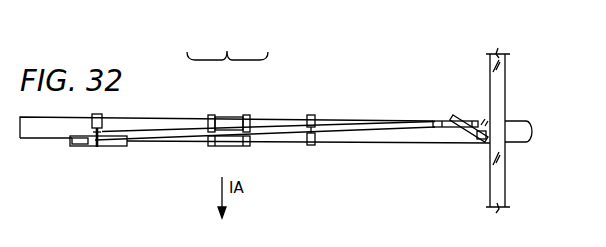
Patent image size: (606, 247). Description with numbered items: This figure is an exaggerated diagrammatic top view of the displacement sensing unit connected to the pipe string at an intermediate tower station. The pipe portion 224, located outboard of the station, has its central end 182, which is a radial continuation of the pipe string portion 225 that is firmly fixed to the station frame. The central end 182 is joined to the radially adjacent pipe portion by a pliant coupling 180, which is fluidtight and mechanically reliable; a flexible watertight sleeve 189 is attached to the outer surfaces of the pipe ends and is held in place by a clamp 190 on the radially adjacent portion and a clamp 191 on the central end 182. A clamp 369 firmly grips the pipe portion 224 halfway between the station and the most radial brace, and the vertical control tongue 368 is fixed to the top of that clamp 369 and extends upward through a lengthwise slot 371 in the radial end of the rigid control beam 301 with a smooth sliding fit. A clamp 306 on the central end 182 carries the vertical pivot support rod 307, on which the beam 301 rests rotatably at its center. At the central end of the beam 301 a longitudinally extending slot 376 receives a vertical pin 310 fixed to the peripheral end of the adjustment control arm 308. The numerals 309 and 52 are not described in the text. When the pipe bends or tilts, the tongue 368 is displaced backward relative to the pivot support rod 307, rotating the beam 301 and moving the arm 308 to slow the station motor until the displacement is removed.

The pipe portion 224 is at (58, 132).
The central end of pipe portion 182 is at (415, 137).
The control beam 301 is at (165, 138).
The slot 371 is at (112, 146).
The clamp 369 is at (97, 114).
The control tongue 368 is at (95, 136).
The pliant coupling 180 is at (227, 43).
The sleeve 189 is at (229, 115).
The clamp 190 is at (212, 115).
The clamp 191 is at (244, 115).
The clamp 306 is at (312, 115).
The pivot support rod 307 is at (310, 145).
The slot 376 is at (442, 120).
The pin 310 is at (462, 118).
The bracket end 309 is at (477, 120).
The adjustment control arm 308 is at (476, 138).
The post 52 is at (505, 72).
The pipe string portion 225 is at (531, 131).